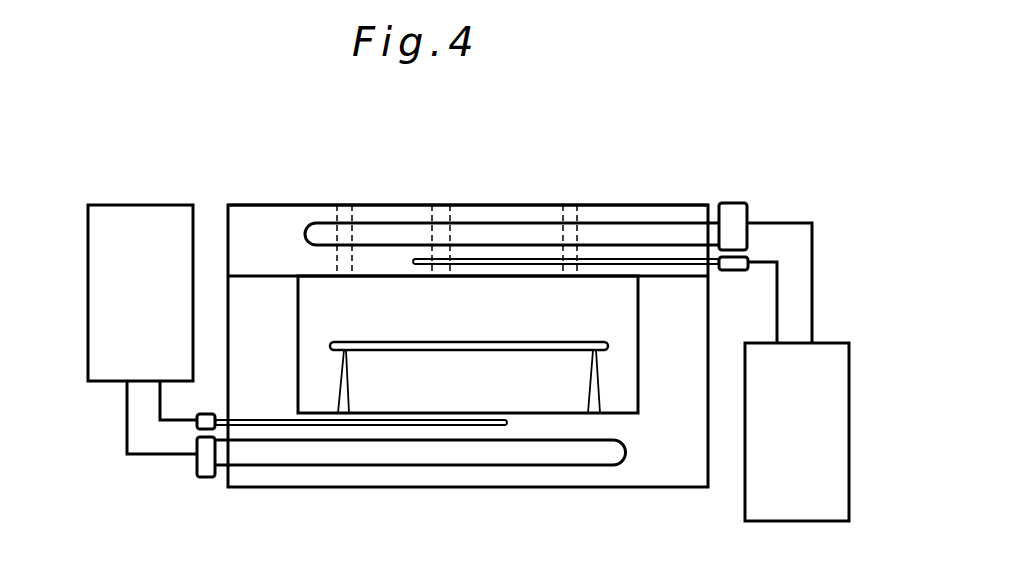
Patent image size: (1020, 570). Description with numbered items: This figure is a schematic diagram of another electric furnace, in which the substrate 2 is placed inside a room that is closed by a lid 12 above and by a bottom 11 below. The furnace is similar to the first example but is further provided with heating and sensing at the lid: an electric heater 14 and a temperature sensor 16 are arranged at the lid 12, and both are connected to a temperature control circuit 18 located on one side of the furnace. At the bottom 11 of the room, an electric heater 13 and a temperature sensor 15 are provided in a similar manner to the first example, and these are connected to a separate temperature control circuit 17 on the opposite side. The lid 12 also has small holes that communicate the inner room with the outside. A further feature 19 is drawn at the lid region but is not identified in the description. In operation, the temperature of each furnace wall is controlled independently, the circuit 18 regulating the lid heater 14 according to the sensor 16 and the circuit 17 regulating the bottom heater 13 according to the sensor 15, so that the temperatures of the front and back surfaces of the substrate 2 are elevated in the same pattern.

The substrate 2 is at (583, 342).
The bottom 11 is at (637, 455).
The lid 12 is at (267, 213).
The electric heater 13 is at (467, 455).
The electric heater 14 is at (478, 228).
The temperature sensor 15 is at (380, 427).
The temperature sensor 16 is at (528, 260).
The temperature control circuit 17 is at (141, 218).
The temperature control circuit 18 is at (826, 362).
The heater zone boundaries 19 is at (345, 202).